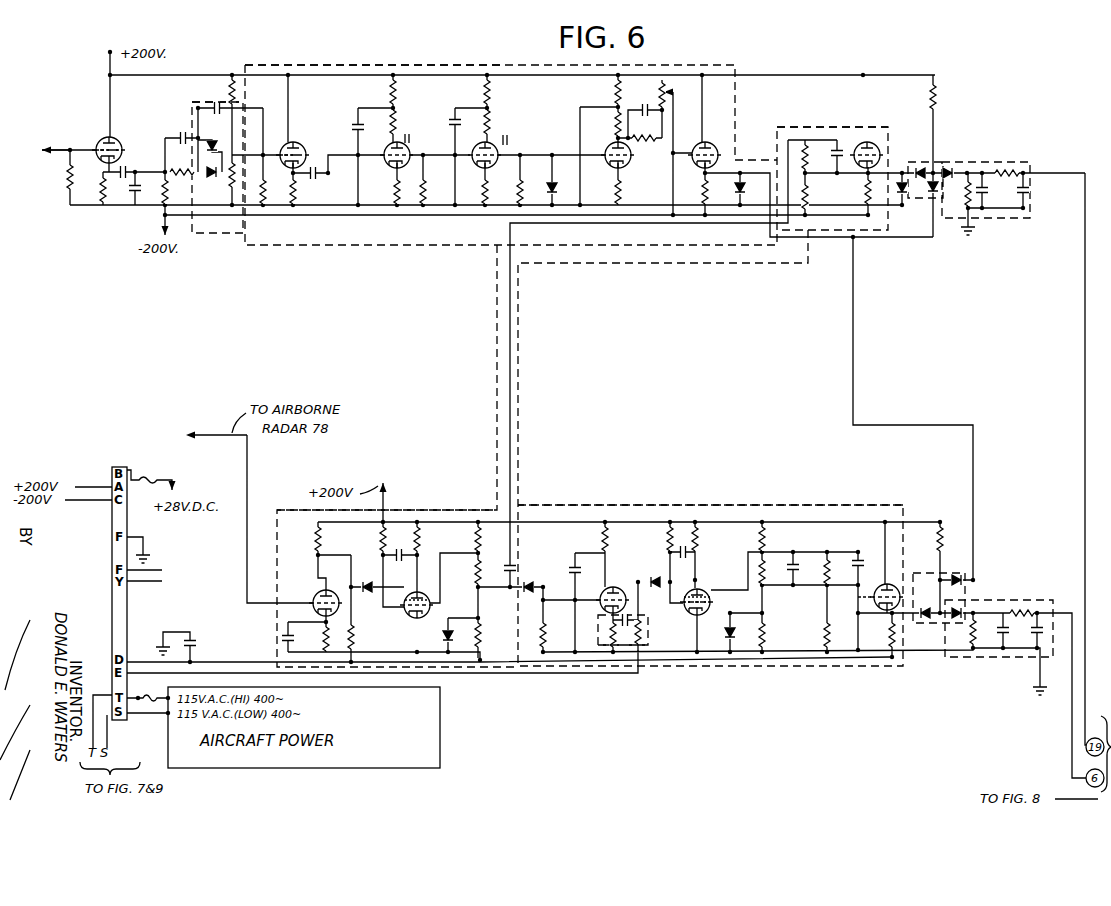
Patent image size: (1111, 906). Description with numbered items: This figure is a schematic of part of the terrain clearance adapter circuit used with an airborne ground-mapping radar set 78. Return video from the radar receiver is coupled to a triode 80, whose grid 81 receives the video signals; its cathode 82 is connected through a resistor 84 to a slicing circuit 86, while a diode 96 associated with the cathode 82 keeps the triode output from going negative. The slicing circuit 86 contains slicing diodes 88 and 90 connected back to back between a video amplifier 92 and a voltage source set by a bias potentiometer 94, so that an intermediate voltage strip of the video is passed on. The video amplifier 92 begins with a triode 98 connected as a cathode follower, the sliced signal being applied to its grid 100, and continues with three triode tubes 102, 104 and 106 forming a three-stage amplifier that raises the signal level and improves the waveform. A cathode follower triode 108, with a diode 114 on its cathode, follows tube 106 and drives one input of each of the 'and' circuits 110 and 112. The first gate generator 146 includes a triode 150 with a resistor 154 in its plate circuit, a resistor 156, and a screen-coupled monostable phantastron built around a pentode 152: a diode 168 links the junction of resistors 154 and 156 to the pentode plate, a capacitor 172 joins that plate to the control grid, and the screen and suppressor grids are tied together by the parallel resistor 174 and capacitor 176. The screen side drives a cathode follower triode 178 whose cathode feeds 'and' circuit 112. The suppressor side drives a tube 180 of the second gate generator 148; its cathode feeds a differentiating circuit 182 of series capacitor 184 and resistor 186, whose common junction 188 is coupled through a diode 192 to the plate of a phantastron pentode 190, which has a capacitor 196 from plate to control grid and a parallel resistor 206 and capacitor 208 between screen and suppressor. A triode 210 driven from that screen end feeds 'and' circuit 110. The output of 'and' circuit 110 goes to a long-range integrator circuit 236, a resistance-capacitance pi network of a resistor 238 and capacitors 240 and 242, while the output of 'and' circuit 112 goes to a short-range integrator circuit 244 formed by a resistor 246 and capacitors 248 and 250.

The airborne ground-mapping radar set 78 is at (59, 138).
The triode 80 is at (117, 142).
The grid 81 is at (128, 151).
The cathode 82 is at (79, 177).
The resistor 84 is at (174, 192).
The slicing circuit 86 is at (206, 99).
The slicing diode 88 is at (194, 168).
The slicing diode 90 is at (216, 136).
The video amplifier 92 is at (383, 65).
The bias potentiometer 94 is at (230, 186).
The diode 96 is at (133, 192).
The triode 98 is at (298, 137).
The grid 100 is at (303, 146).
The triode tube 102 is at (410, 139).
The triode tube 104 is at (506, 140).
The triode tube 106 is at (624, 168).
The triode 108 is at (709, 140).
The 'and' circuit 110 is at (932, 574).
The 'and' circuit 112 is at (910, 160).
The diode 114 is at (744, 174).
The first gate generator 146 is at (441, 504).
The second gate generator 148 is at (676, 504).
The triode 150 is at (318, 591).
The pentode 152 is at (408, 618).
The resistor 154 is at (320, 540).
The resistor 156 is at (353, 632).
The diode 168 is at (378, 586).
The capacitor 172 is at (400, 559).
The resistor 174 is at (478, 572).
The capacitor 176 is at (515, 569).
The triode 178 is at (858, 141).
The tube 180 is at (605, 594).
The differentiating circuit 182 is at (616, 619).
The capacitor 184 is at (607, 633).
The resistor 186 is at (638, 643).
The common junction 188 is at (645, 622).
The pentode 190 is at (690, 619).
The diode 192 is at (659, 585).
The capacitor 196 is at (677, 552).
The resistor 206 is at (759, 573).
The capacitor 208 is at (798, 573).
The triode 210 is at (883, 563).
The long-range integrator circuit 236 is at (1014, 598).
The resistor 238 is at (1040, 606).
The capacitor 240 is at (1038, 652).
The capacitor 242 is at (998, 652).
The short-range integrator circuit 244 is at (960, 161).
The resistor 246 is at (1002, 168).
The capacitor 248 is at (984, 190).
The capacitor 250 is at (1028, 193).